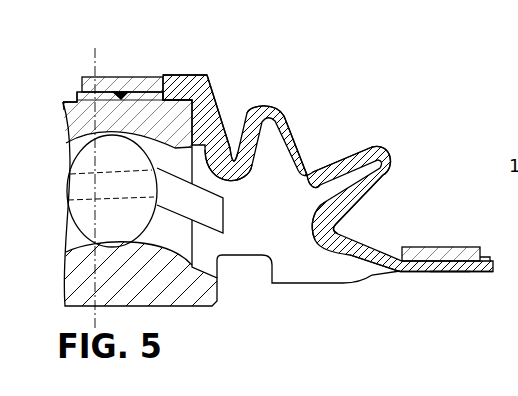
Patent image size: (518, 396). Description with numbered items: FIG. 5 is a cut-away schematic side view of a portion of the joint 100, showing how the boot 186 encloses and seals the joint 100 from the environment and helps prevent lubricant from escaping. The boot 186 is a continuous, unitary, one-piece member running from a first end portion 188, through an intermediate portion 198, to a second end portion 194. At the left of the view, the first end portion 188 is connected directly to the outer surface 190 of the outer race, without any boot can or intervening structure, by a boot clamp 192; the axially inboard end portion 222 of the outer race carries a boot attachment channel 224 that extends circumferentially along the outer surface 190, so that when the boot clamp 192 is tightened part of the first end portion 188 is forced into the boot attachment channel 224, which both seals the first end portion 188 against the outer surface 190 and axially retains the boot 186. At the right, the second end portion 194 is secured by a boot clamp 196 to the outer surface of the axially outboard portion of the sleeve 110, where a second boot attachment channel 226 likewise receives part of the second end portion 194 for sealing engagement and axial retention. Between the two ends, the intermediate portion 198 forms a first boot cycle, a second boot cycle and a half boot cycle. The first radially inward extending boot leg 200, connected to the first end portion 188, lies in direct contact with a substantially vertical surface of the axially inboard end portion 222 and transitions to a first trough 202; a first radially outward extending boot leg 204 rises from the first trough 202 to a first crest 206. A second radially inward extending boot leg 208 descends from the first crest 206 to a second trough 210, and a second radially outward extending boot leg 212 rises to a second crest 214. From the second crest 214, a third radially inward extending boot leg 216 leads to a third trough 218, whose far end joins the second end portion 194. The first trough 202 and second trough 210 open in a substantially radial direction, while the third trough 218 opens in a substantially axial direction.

The joint 100 is at (218, 315).
The sleeve 110 is at (302, 284).
The boot 186 is at (166, 74).
The first end portion 188 is at (156, 111).
The outer surface 190 is at (72, 112).
The boot clamp 192 is at (83, 77).
The second end portion 194 is at (405, 278).
The boot clamp 196 is at (441, 254).
The intermediate portion 198 is at (316, 100).
The first radially inward extending boot leg 200 is at (204, 75).
The first trough 202 is at (234, 158).
The first radially outward extending boot leg 204 is at (256, 172).
The first crest 206 is at (268, 106).
The second radially inward extending boot leg 208 is at (297, 150).
The second trough 210 is at (305, 191).
The second radially outward extending boot leg 212 is at (349, 156).
The second crest 214 is at (392, 157).
The third radially inward extending boot leg 216 is at (358, 203).
The third trough 218 is at (334, 232).
The axially inboard end portion 222 is at (66, 100).
The boot attachment channel 224 is at (66, 143).
The boot attachment channel 226 is at (444, 273).